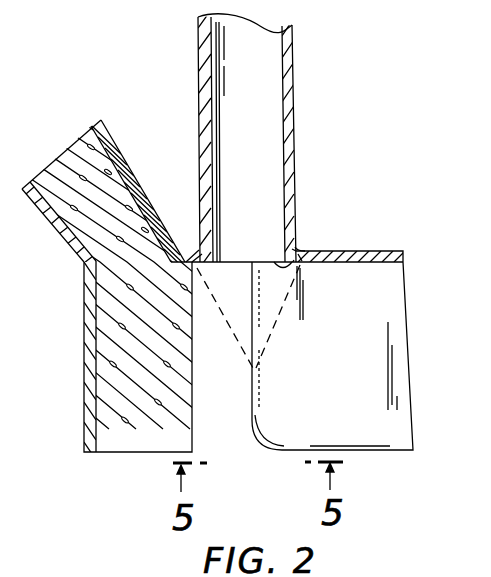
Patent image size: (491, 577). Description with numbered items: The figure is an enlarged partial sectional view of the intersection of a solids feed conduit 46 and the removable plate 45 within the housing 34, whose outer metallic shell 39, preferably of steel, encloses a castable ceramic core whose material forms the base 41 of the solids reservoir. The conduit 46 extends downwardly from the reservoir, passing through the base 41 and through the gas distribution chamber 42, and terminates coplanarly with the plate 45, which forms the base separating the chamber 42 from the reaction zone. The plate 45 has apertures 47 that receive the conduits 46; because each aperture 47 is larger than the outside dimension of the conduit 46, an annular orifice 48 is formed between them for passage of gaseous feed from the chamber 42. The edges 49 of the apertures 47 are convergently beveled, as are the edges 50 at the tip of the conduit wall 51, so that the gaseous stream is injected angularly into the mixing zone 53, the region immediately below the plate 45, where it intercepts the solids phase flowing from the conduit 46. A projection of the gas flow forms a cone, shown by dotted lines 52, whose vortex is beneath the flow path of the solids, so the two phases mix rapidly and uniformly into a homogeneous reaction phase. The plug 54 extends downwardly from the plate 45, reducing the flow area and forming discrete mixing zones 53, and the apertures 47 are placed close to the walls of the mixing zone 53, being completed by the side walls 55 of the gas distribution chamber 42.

The housing 34 is at (78, 262).
The outer metallic shell 39 is at (84, 403).
The base of the reservoir 41 is at (68, 178).
The gas distribution chamber 42 is at (183, 170).
The removable plate 45 is at (338, 251).
The conduit 46 is at (263, 175).
The aperture 47 is at (237, 276).
The annular orifice 48 is at (301, 248).
The edge of the aperture 49 is at (192, 250).
The edge at the tip of the conduit wall 50 is at (276, 264).
The conduit wall 51 is at (298, 88).
The dotted lines 52 is at (278, 336).
The mixing zone 53 is at (233, 396).
The plug 54 is at (393, 312).
The side wall of gas distribution chamber 55 is at (124, 156).